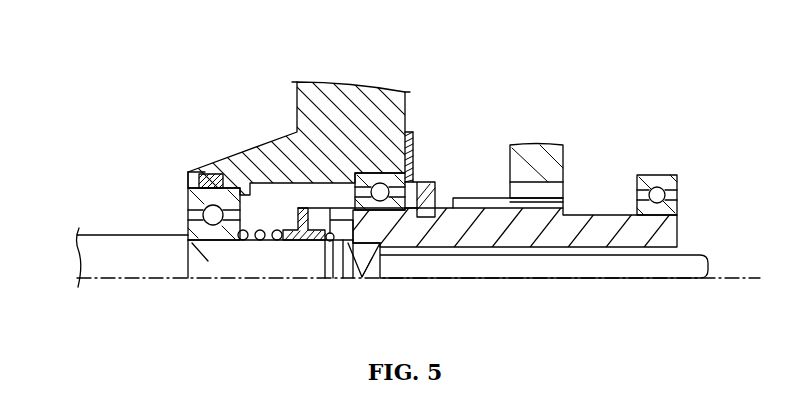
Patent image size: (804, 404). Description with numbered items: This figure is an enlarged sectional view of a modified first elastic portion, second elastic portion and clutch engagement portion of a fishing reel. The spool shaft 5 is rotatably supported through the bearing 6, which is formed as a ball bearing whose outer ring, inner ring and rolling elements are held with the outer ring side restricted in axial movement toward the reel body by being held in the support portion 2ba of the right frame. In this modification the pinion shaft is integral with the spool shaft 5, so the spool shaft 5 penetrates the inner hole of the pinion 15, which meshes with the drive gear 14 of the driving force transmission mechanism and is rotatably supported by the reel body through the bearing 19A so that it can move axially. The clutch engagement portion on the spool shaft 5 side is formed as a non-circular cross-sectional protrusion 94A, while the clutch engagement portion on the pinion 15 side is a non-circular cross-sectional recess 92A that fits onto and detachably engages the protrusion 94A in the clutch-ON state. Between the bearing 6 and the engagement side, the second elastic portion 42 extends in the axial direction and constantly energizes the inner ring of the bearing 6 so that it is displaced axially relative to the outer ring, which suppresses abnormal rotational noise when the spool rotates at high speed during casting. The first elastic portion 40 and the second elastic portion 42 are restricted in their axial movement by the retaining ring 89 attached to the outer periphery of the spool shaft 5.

The spool shaft 5 is at (188, 226).
The bearing 6 is at (188, 171).
The support portion 2ba is at (241, 161).
The retaining ring 89 is at (331, 232).
The non-circular cross-sectional recess 92A is at (382, 186).
The drive gear 14 is at (525, 150).
The bearing 19A is at (413, 172).
The pinion 15 is at (563, 206).
The second elastic portion 42 is at (262, 244).
The first elastic portion 40 is at (305, 245).
The non-circular cross-sectional protrusion 94A is at (374, 273).